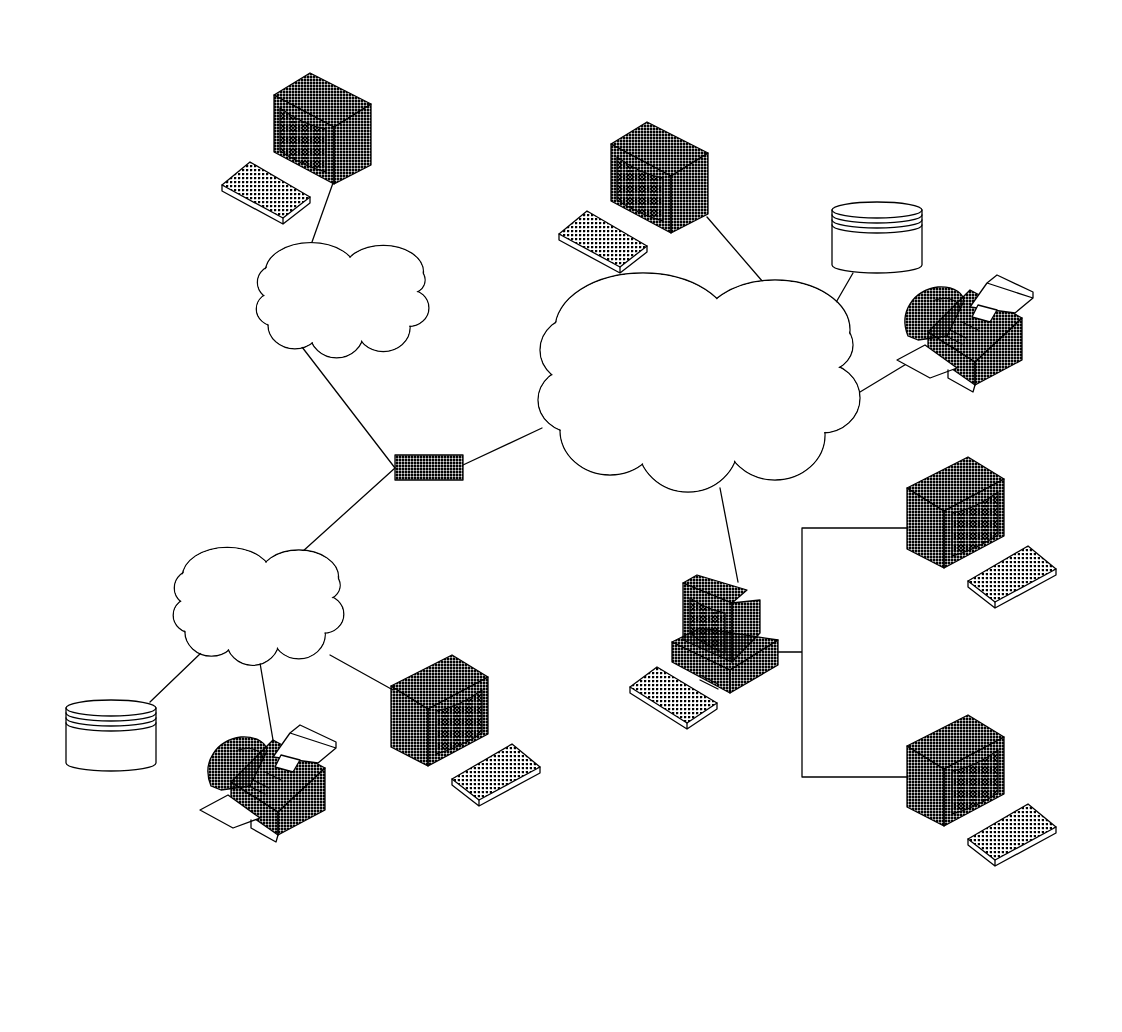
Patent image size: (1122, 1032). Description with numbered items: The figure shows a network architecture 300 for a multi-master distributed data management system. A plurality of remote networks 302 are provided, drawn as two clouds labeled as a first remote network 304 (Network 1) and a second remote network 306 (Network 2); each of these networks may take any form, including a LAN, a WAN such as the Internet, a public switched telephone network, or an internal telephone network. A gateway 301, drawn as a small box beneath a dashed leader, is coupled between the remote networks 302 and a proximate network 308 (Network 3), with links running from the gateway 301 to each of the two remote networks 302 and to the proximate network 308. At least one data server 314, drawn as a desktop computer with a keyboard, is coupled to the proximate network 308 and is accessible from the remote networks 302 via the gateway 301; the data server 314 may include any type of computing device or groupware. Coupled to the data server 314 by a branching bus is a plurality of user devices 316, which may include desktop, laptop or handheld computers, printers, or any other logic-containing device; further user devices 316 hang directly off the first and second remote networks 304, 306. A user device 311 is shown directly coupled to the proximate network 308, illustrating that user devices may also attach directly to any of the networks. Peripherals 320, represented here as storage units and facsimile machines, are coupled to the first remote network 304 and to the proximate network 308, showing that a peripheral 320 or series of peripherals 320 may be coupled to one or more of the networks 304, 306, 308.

The network architecture 300 is at (585, 38).
The gateway 301 is at (427, 455).
The remote networks 302 is at (242, 380).
The first remote network 304 is at (177, 578).
The second remote network 306 is at (428, 304).
The proximate network 308 is at (827, 450).
The user device 311 is at (712, 192).
The data server 314 is at (680, 605).
The user devices 316 is at (373, 138).
The peripheral 320 is at (877, 202).